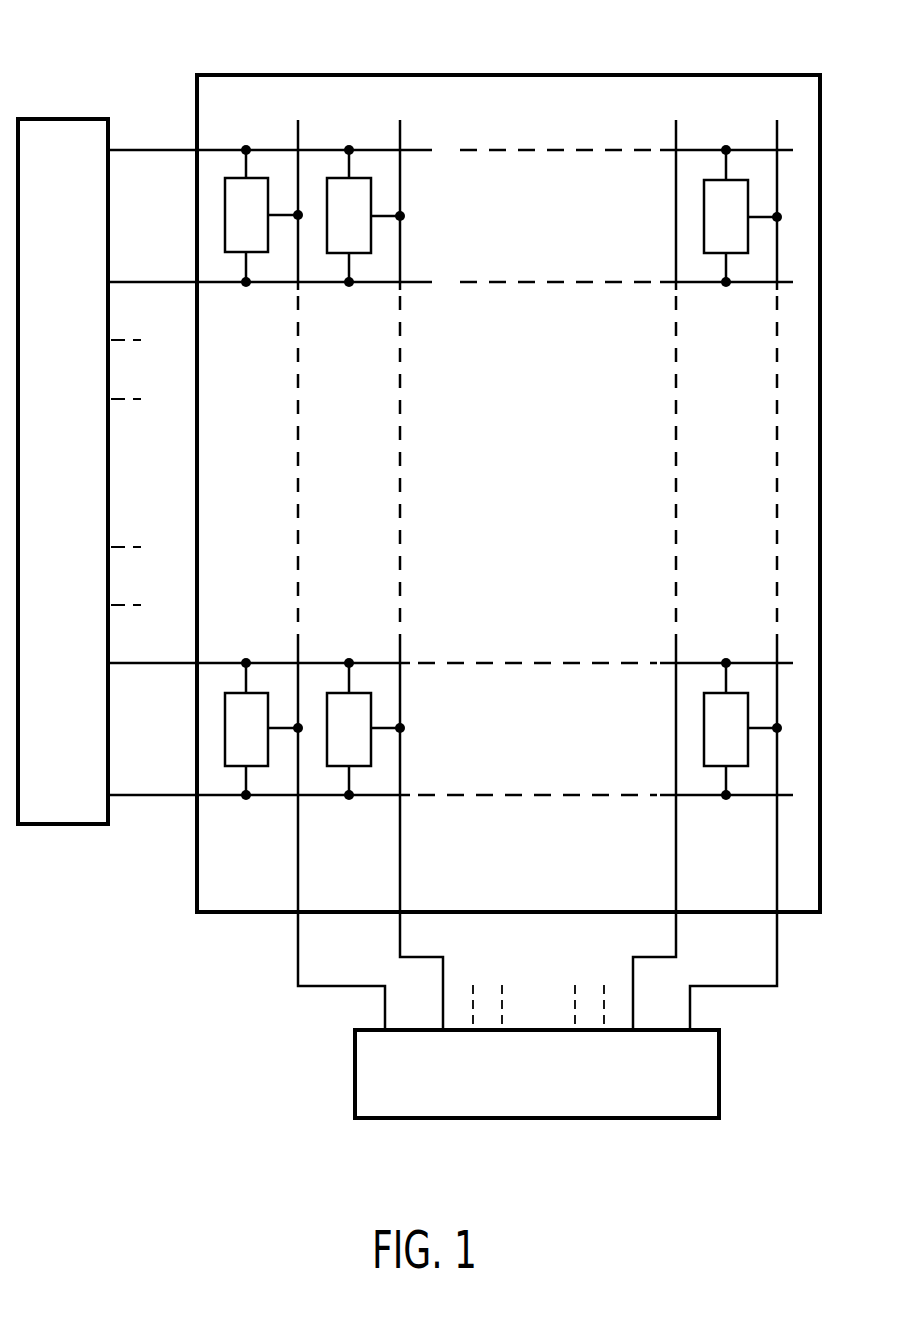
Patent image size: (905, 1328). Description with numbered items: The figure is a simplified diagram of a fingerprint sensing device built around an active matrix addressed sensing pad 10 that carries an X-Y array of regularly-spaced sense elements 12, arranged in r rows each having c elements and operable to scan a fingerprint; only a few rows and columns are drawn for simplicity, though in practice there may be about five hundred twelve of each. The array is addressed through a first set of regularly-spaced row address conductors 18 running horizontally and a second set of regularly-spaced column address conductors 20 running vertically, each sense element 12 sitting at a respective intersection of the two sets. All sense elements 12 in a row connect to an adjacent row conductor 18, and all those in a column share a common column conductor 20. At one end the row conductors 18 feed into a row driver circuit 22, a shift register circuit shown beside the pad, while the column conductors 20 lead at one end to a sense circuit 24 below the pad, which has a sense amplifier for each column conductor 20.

The active matrix addressed sensing pad 10 is at (573, 75).
The sense element 12 is at (221, 207).
The row address conductor 18 is at (430, 151).
The column address conductor 20 is at (400, 136).
The row driver circuit 22 is at (61, 118).
The sense circuit 24 is at (355, 1074).